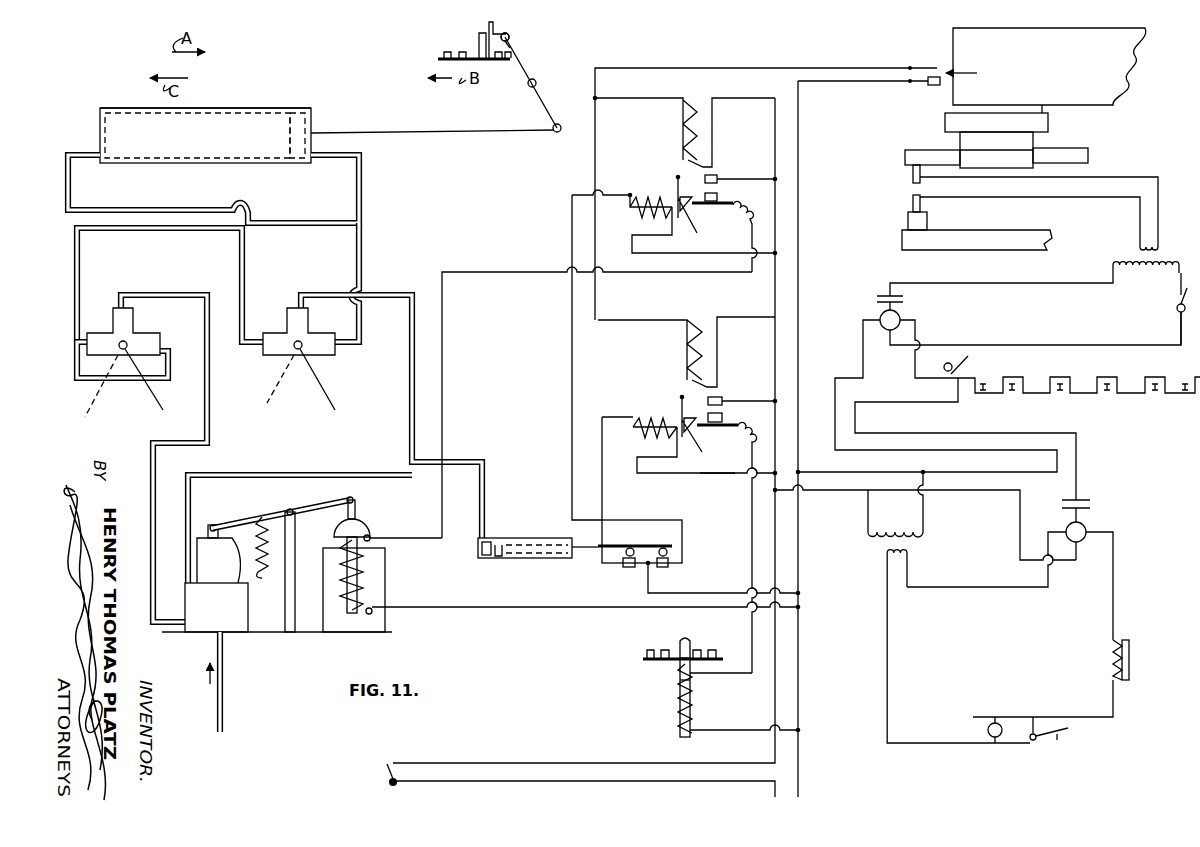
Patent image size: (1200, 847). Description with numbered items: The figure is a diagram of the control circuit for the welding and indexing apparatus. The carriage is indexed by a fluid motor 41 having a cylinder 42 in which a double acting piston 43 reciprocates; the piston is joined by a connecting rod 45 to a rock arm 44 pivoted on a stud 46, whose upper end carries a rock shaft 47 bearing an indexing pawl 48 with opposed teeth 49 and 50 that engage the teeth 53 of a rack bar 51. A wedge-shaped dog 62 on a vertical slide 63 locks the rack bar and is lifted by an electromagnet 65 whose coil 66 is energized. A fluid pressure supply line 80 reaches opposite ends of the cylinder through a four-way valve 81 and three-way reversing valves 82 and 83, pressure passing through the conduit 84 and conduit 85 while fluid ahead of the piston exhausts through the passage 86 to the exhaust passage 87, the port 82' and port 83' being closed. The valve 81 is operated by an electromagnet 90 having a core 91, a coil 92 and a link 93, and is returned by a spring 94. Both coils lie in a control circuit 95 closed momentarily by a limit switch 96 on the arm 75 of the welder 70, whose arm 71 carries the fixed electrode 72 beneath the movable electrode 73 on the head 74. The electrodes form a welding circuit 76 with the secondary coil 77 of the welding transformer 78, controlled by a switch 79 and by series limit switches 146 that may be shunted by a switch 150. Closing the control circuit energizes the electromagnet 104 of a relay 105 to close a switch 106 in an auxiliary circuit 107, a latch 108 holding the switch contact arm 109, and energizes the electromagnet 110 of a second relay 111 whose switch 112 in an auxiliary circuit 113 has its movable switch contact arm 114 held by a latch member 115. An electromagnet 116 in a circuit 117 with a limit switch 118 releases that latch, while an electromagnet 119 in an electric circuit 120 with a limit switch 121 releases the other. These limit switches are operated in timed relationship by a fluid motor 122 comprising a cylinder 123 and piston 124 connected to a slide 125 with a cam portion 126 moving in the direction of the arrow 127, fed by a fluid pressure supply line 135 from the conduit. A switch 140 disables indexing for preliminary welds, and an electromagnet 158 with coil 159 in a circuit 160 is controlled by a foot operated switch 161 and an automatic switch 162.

The fluid motor 41 is at (135, 102).
The cylinder 42 is at (205, 113).
The double acting piston 43 is at (304, 114).
The rock arm 44 is at (529, 73).
The connecting rod 45 is at (403, 131).
The stud 46 is at (527, 88).
The rock shaft 47 is at (509, 46).
The indexing pawl 48 is at (508, 33).
The pawl tooth 49 is at (490, 24).
The pawl tooth 50 is at (477, 48).
The rack bar 51 is at (440, 58).
The teeth 53 is at (463, 53).
The wedge-shaped dog 62 is at (691, 643).
The vertical slide 63 is at (692, 664).
The electromagnet 65 is at (664, 678).
The coil 66 is at (680, 701).
The welder 70 is at (912, 133).
The arm 71 is at (1001, 240).
The fixed electrode 72 is at (912, 209).
The movable electrode 73 is at (913, 175).
The head 74 is at (1012, 148).
The arm 75 is at (1093, 88).
The welding circuit 76 is at (1112, 178).
The secondary coil 77 is at (1140, 247).
The welding transformer 78 is at (1110, 262).
The switch 79 is at (1177, 304).
The fluid pressure supply line 80 is at (222, 690).
The four-way valve 81 is at (205, 559).
The three-way reversing valve 82 is at (294, 349).
The port 82' is at (225, 302).
The three-way reversing valve 83 is at (130, 361).
The port 83' is at (135, 352).
The conduit 84 is at (402, 281).
The conduit 85 is at (77, 157).
The passage 86 is at (363, 179).
The exhaust passage 87 is at (211, 393).
The electromagnet 90 is at (382, 536).
The core 91 is at (370, 530).
The coil 92 is at (371, 580).
The link 93 is at (306, 503).
The spring 94 is at (260, 531).
The control circuit 95 is at (714, 478).
The limit switch 96 is at (927, 62).
The electromagnet 104 is at (688, 101).
The relay 105 is at (721, 172).
The switch 106 is at (722, 190).
The auxiliary circuit 107 is at (445, 298).
The latch 108 is at (704, 215).
The switch contact arm 109 is at (726, 207).
The electromagnet 110 is at (690, 321).
The second relay 111 is at (724, 393).
The switch 112 is at (723, 414).
The auxiliary circuit 113 is at (723, 578).
The movable switch contact arm 114 is at (734, 434).
The latch member 115 is at (696, 433).
The electromagnet 116 is at (655, 420).
The circuit 117 is at (614, 416).
The limit switch 118 is at (628, 568).
The electromagnet 119 is at (655, 200).
The electric circuit 120 is at (587, 193).
The limit switch 121 is at (659, 568).
The fluid motor 122 is at (524, 539).
The cylinder 123 is at (521, 559).
The piston 124 is at (498, 562).
The slide 125 is at (612, 545).
The cam portion 126 is at (625, 547).
The arrow 127 is at (572, 586).
The fluid pressure supply line 135 is at (484, 480).
The switch 140 is at (386, 778).
The limit switches 146 is at (990, 378).
The switch 150 is at (955, 358).
The electromagnet 158 is at (1110, 655).
The coil 159 is at (1130, 656).
The circuit 160 is at (887, 677).
The foot operated switch 161 is at (1045, 742).
The automatic switch 162 is at (993, 740).